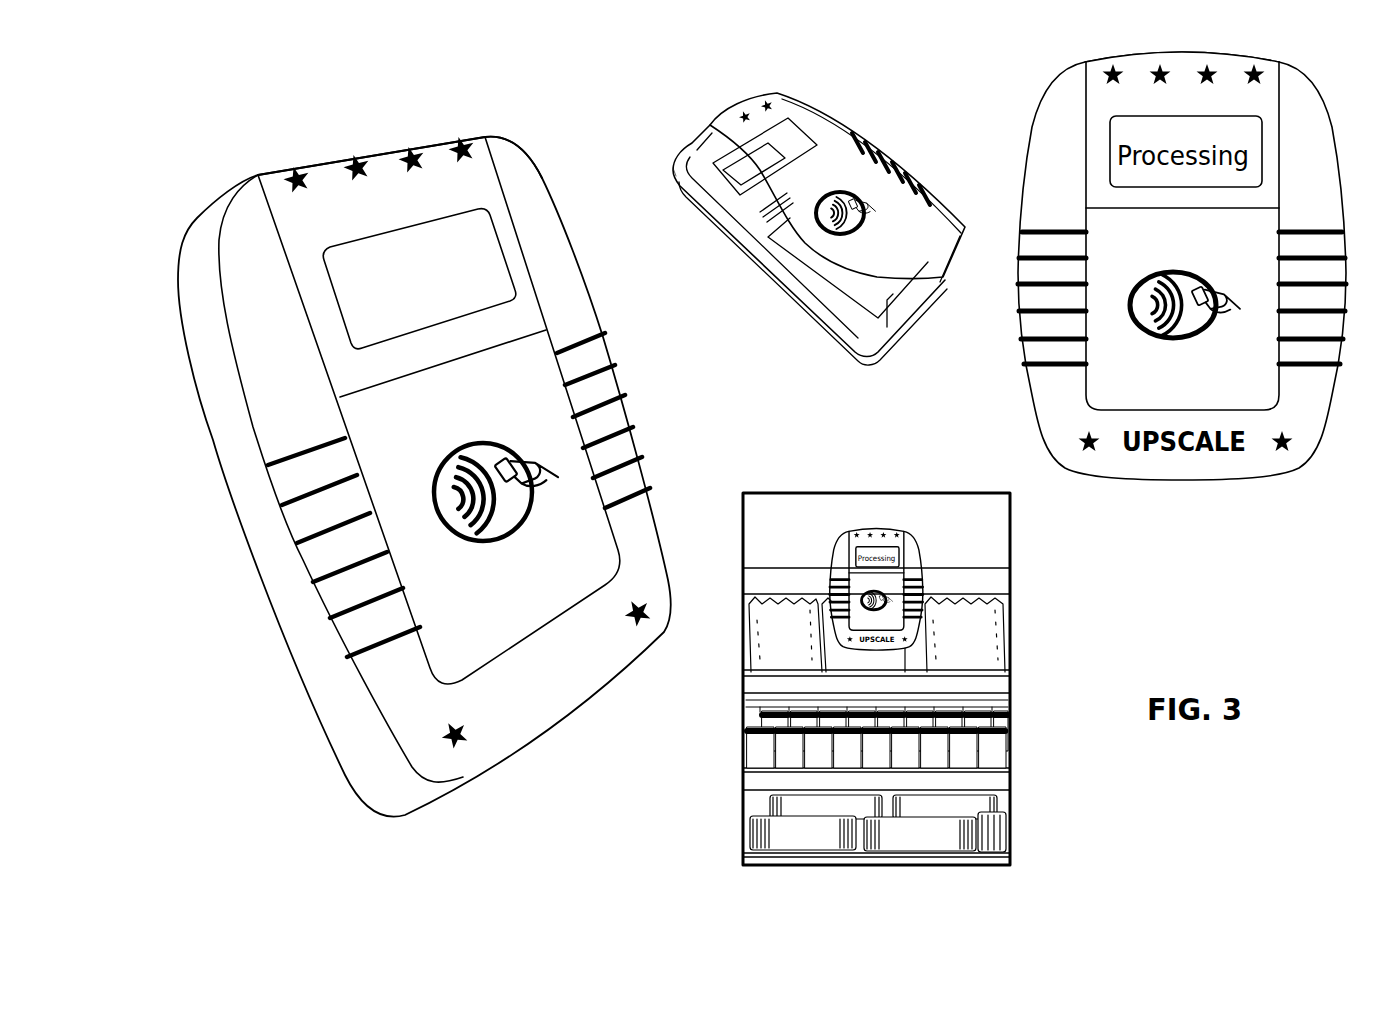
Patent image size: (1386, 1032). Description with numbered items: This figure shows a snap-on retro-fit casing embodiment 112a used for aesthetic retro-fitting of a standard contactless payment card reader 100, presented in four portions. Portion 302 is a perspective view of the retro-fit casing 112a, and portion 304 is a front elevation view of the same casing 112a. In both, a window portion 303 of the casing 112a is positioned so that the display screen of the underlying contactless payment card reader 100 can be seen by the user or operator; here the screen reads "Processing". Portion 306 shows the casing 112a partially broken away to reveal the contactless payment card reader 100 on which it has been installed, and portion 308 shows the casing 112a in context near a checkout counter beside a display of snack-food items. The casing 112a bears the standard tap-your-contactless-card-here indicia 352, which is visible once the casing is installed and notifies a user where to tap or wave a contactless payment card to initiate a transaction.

The contactless payment card reader 100 is at (797, 308).
The retro-fit casing embodiment 112a is at (556, 203).
The perspective view portion 302 is at (510, 767).
The window portion 303 is at (493, 225).
The front elevation view portion 304 is at (1237, 490).
The partially broken-away view portion 306 is at (725, 267).
The contextual view portion 308 is at (1031, 578).
The tap-your-contactless-card-here indicia 352 is at (447, 533).